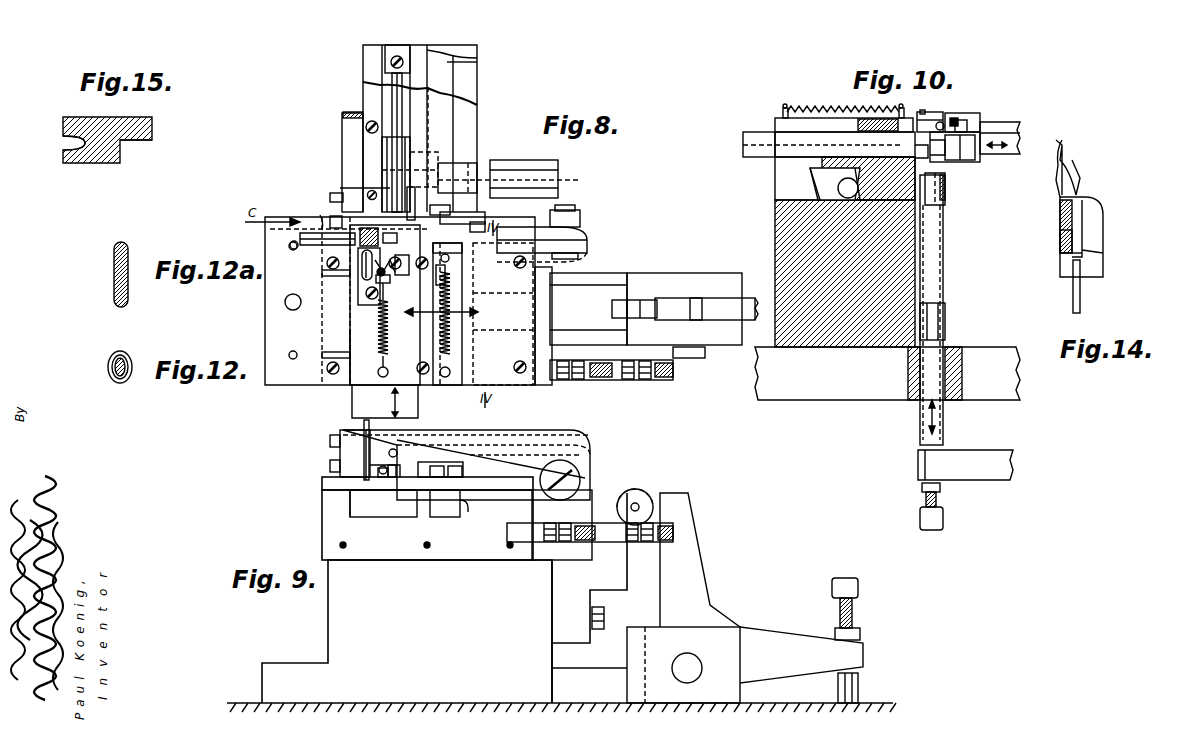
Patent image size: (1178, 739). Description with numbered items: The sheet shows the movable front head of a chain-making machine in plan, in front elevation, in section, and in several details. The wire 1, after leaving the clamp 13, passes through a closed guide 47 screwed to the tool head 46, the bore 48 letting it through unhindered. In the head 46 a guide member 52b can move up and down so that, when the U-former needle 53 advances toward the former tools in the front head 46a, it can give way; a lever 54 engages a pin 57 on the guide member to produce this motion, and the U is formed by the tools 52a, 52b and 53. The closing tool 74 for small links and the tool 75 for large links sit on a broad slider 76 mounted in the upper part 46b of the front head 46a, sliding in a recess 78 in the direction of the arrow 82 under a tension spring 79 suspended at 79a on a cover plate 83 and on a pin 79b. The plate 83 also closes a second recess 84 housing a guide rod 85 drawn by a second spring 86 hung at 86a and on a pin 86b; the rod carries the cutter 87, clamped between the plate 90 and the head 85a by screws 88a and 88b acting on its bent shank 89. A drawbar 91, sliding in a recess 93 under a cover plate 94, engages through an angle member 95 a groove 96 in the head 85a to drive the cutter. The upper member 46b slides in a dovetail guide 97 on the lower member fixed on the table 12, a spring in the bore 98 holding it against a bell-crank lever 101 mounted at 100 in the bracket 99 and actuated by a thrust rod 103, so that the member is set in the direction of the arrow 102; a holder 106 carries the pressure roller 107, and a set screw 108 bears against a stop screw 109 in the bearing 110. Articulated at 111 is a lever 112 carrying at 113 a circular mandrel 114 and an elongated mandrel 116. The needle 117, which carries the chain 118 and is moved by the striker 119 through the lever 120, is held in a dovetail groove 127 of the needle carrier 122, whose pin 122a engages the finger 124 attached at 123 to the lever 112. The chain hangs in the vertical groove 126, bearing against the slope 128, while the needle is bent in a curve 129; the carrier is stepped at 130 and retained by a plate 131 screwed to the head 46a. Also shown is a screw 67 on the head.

In FIG. 8, the wire 1 is at (505, 180).
In FIG. 9, the table 12 is at (788, 704).
In FIG. 10, the table 12 is at (978, 348).
In FIG. 8, the clamp 13 is at (518, 170).
In FIG. 8, the tool head 46 is at (470, 120).
In FIG. 8, the front head 46a is at (296, 378).
In FIG. 9, the front head 46a is at (330, 611).
In FIG. 10, the front head 46a is at (845, 273).
In FIG. 8, the upper part of the front head 46b is at (338, 378).
In FIG. 9, the upper part of the front head 46b is at (330, 523).
In FIG. 10, the upper part of the front head 46b is at (780, 181).
In FIG. 8, the closed guide 47 is at (460, 170).
In FIG. 8, the bore 48 is at (474, 162).
In FIG. 8, the tool 52a is at (382, 148).
In FIG. 8, the guide member 52b is at (382, 184).
In FIG. 8, the U-former needle 53 is at (392, 100).
In FIG. 8, the lever 54 is at (349, 134).
In FIG. 8, the pin 57 is at (330, 193).
In FIG. 8, the screw 67 is at (385, 54).
In FIG. 8, the closing tool 74 is at (392, 275).
In FIG. 8, the tool for closing the large links 75 is at (358, 287).
In FIG. 8, the slider 76 is at (412, 400).
In FIG. 9, the slider 76 is at (371, 512).
In FIG. 8, the recess 78 is at (348, 330).
In FIG. 9, the recess 78 is at (350, 498).
In FIG. 8, the tension spring 79 is at (388, 338).
In FIG. 8, the suspension point of spring 79a is at (388, 372).
In FIG. 9, the suspension point of spring 79a is at (382, 482).
In FIG. 8, the pin 79b is at (395, 291).
In FIG. 8, the arrow 82 is at (392, 398).
In FIG. 8, the cover plate 83 is at (490, 385).
In FIG. 9, the cover plate 83 is at (324, 483).
In FIG. 10, the cover plate 83 is at (775, 122).
In FIG. 8, the second recess 84 is at (462, 292).
In FIG. 9, the second recess 84 is at (472, 512).
In FIG. 10, the second recess 84 is at (775, 130).
In FIG. 8, the guide rod 85 is at (445, 390).
In FIG. 9, the guide rod 85 is at (436, 510).
In FIG. 10, the guide rod 85 is at (752, 151).
In FIG. 10, the head of the rod 85a is at (950, 145).
In FIG. 8, the second spring 86 is at (450, 328).
In FIG. 10, the second spring 86 is at (820, 110).
In FIG. 8, the suspension point of second spring 86a is at (448, 366).
In FIG. 9, the suspension point of second spring 86a is at (446, 466).
In FIG. 8, the pin 86b is at (450, 262).
In FIG. 8, the cutter 87 is at (409, 210).
In FIG. 10, the cutter 87 is at (970, 115).
In FIG. 10, the screw 88a is at (924, 112).
In FIG. 8, the screw 88b is at (458, 251).
In FIG. 10, the screw 88b is at (940, 104).
In FIG. 8, the rectangularly bent shank 89 is at (470, 220).
In FIG. 10, the rectangularly bent shank 89 is at (965, 115).
In FIG. 8, the plate 90 is at (462, 210).
In FIG. 10, the plate 90 is at (946, 114).
In FIG. 8, the drawbar 91 is at (447, 75).
In FIG. 10, the drawbar 91 is at (996, 152).
In FIG. 8, the recess 93 is at (440, 54).
In FIG. 8, the cover plate 94 is at (472, 100).
In FIG. 8, the angle member 95 is at (490, 224).
In FIG. 10, the angle member 95 is at (958, 160).
In FIG. 10, the groove 96 is at (918, 147).
In FIG. 10, the dovetail guide 97 is at (852, 200).
In FIG. 10, the bore 98 is at (848, 188).
In FIG. 8, the bracket 99 is at (710, 282).
In FIG. 9, the bracket 99 is at (627, 653).
In FIG. 8, the mounting point of bell-crank lever 100 is at (706, 352).
In FIG. 9, the mounting point of bell-crank lever 100 is at (680, 673).
In FIG. 8, the bell-crank lever 101 is at (668, 300).
In FIG. 9, the bell-crank lever 101 is at (705, 613).
In FIG. 8, the arrow 102 is at (455, 308).
In FIG. 9, the thrust rod 103 is at (858, 690).
In FIG. 8, the holder 106 is at (582, 292).
In FIG. 9, the holder 106 is at (598, 498).
In FIG. 8, the pressure roller 107 is at (632, 300).
In FIG. 9, the pressure roller 107 is at (650, 498).
In FIG. 8, the set screw 108 is at (552, 382).
In FIG. 9, the set screw 108 is at (540, 542).
In FIG. 8, the second set screw 109 is at (580, 382).
In FIG. 9, the second set screw 109 is at (585, 542).
In FIG. 8, the bearing 110 is at (615, 382).
In FIG. 9, the bearing 110 is at (624, 566).
In FIG. 8, the articulation point of lever 111 is at (580, 224).
In FIG. 9, the articulation point of lever 111 is at (580, 475).
In FIG. 8, the lever 112 is at (542, 238).
In FIG. 9, the lever 112 is at (508, 438).
In FIG. 9, the mounting point of mandrel 113 is at (402, 456).
In FIG. 9, the mandrel 114 is at (396, 470).
In FIG. 12, the mandrel 114 is at (108, 366).
In FIG. 9, the mandrel 116 is at (364, 418).
In FIG. 12A, the mandrel 116 is at (130, 285).
In FIG. 8, the needle 117 is at (345, 214).
In FIG. 10, the needle 117 is at (944, 175).
In FIG. 14, the needle 117 is at (1058, 188).
In FIG. 14, the chain 118 is at (1070, 160).
In FIG. 10, the striker 119 is at (940, 424).
In FIG. 10, the lever 120 is at (960, 455).
In FIG. 8, the needle carrier 122 is at (382, 238).
In FIG. 10, the needle carrier 122 is at (944, 252).
In FIG. 14, the needle carrier 122 is at (1090, 235).
In FIG. 15, the needle carrier 122 is at (107, 133).
In FIG. 8, the pin 122a is at (323, 215).
In FIG. 9, the attachment point of finger 123 is at (340, 450).
In FIG. 8, the finger 124 is at (325, 246).
In FIG. 9, the finger 124 is at (330, 466).
In FIG. 8, the vertical groove 126 is at (415, 274).
In FIG. 10, the vertical groove 126 is at (945, 314).
In FIG. 14, the vertical groove 126 is at (1070, 278).
In FIG. 15, the vertical groove 126 is at (66, 143).
In FIG. 14, the dovetail groove 127 is at (1062, 234).
In FIG. 10, the slope 128 is at (944, 190).
In FIG. 14, the curve 129 is at (1057, 168).
In FIG. 15, the step 130 is at (125, 148).
In FIG. 8, the plate 131 is at (384, 230).